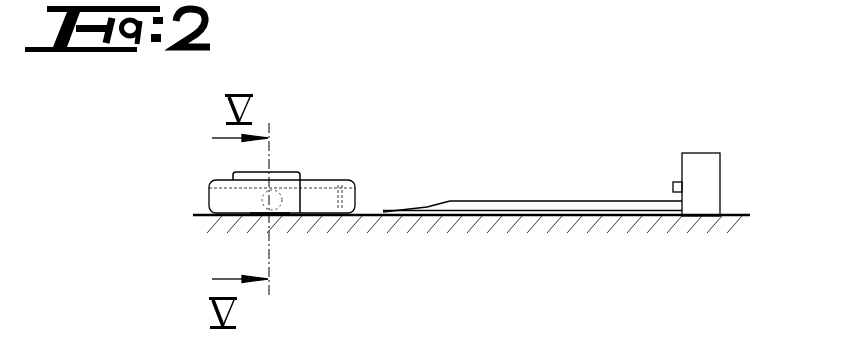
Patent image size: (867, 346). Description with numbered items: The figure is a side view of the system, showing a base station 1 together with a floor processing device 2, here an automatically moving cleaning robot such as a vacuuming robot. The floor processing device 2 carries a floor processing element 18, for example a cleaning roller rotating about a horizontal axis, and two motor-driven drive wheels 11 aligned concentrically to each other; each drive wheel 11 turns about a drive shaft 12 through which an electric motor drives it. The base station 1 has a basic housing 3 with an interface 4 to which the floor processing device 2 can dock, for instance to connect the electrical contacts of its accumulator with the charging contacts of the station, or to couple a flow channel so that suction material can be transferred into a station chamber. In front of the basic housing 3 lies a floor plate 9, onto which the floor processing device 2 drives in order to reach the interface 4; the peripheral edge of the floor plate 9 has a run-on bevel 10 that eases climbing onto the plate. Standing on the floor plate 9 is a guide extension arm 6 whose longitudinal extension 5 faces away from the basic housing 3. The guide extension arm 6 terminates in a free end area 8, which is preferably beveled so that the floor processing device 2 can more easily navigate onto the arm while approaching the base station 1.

The base station 1 is at (552, 184).
The floor processing device 2 is at (241, 198).
The basic housing 3 is at (699, 167).
The interface 4 is at (673, 188).
The longitudinal extension 5 is at (537, 213).
The guide extension arm 6 is at (503, 180).
The end area 8 is at (382, 184).
The floor plate 9 is at (614, 247).
The run-on bevel 10 is at (432, 207).
The drive wheel 11 is at (267, 215).
The drive shaft 12 is at (265, 201).
The floor processing element 18 is at (327, 213).